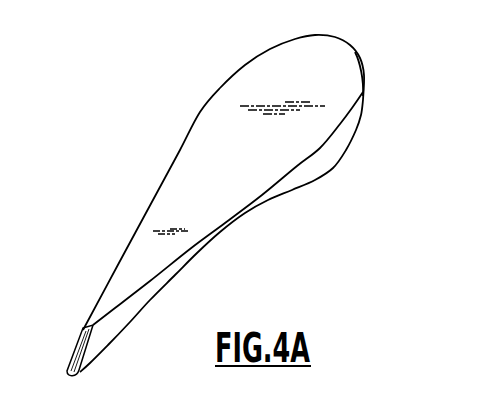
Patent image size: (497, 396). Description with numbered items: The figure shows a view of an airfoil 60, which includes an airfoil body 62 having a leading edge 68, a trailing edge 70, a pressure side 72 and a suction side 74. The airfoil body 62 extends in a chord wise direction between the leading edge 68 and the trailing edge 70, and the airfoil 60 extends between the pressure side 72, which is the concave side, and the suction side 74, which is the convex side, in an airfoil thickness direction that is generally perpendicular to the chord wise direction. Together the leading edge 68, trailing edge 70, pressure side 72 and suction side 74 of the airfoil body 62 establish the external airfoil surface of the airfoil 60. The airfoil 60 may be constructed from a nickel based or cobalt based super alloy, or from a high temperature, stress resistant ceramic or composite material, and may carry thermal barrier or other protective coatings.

The airfoil 60 is at (221, 196).
The airfoil body 62 is at (261, 214).
The leading edge 68 is at (358, 55).
The trailing edge 70 is at (70, 360).
The pressure side 72 is at (226, 225).
The suction side 74 is at (190, 130).